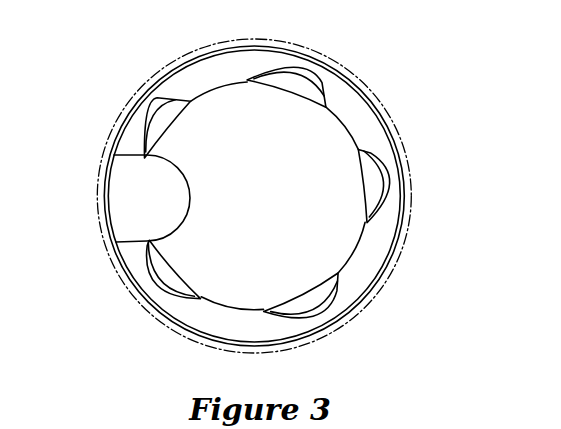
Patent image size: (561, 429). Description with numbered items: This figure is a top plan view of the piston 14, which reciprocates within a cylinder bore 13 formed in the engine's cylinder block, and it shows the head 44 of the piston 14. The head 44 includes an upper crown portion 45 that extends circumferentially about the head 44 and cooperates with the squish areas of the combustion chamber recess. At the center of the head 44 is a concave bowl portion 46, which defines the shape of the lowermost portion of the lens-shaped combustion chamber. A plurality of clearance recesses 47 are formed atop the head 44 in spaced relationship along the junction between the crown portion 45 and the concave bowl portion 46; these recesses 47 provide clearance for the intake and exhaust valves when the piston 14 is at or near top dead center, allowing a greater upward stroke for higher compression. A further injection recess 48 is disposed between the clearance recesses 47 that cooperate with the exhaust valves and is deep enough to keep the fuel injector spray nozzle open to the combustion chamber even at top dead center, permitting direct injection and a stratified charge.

The cylinder bore 13 is at (122, 282).
The piston 14 is at (338, 128).
The head 44 is at (283, 205).
The crown portion 45 is at (378, 248).
The concave bowl portion 46 is at (228, 306).
The clearance recesses 47 is at (152, 120).
The injection recess 48 is at (172, 183).